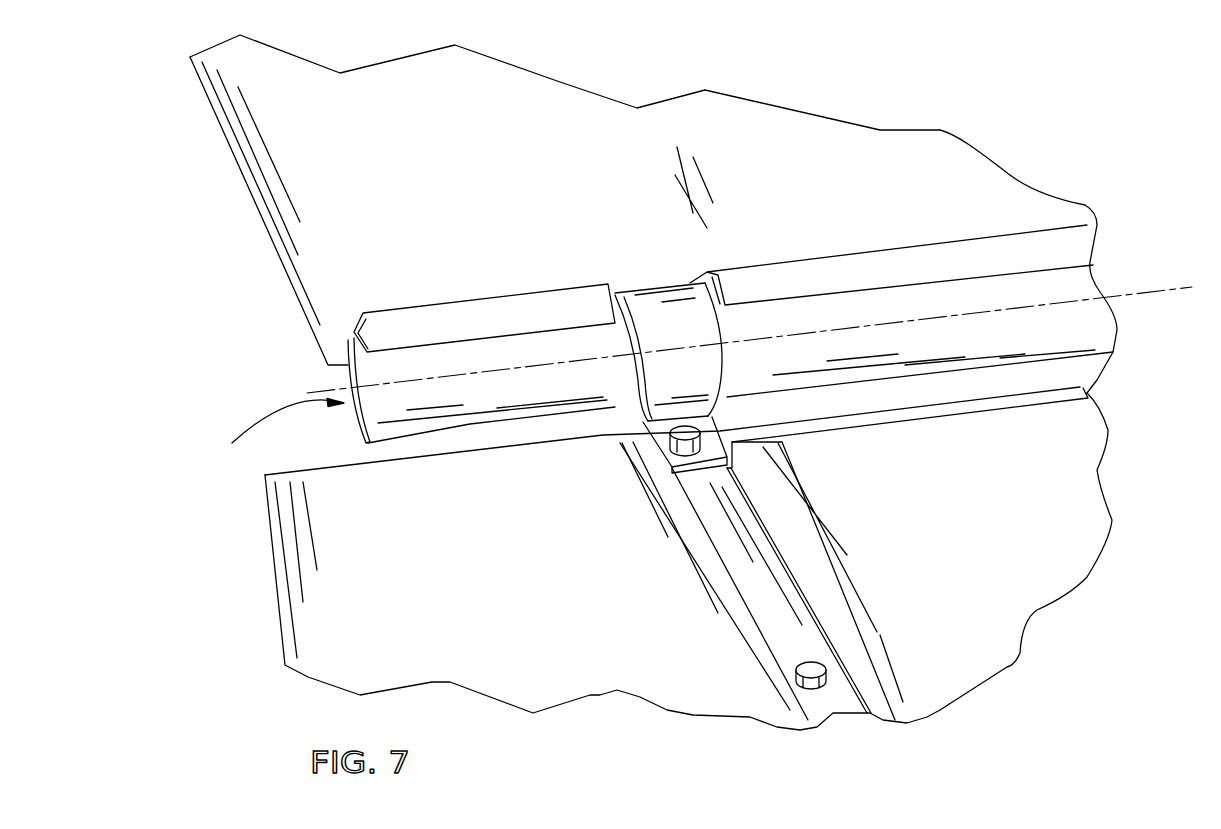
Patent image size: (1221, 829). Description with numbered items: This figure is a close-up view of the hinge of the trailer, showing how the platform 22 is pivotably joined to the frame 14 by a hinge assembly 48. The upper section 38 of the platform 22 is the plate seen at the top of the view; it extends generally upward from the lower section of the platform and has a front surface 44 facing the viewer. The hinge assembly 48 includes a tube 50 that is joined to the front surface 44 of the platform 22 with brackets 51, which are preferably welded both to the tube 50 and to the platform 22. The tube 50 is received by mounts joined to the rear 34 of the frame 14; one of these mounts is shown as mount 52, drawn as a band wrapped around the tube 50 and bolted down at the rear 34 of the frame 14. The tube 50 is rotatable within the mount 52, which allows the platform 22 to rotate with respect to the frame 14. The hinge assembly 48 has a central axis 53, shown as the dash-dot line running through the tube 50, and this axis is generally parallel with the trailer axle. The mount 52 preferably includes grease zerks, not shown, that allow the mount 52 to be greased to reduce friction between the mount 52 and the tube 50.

The frame 14 is at (1067, 552).
The platform 22 is at (943, 122).
The rear 34 is at (1092, 391).
The upper section 38 is at (503, 97).
The front surface 44 is at (599, 191).
The hinge assembly 48 is at (271, 435).
The tube 50 is at (435, 420).
The brackets 51 is at (402, 322).
The mount 52 is at (660, 395).
The central axis 53 is at (1167, 288).